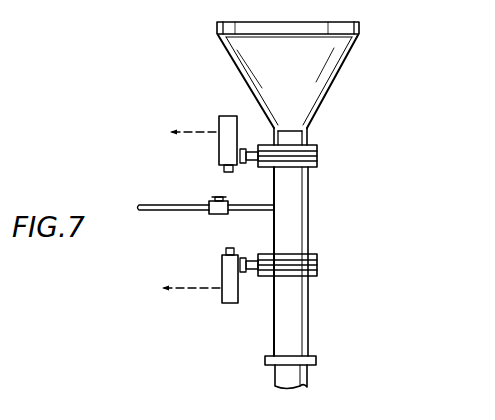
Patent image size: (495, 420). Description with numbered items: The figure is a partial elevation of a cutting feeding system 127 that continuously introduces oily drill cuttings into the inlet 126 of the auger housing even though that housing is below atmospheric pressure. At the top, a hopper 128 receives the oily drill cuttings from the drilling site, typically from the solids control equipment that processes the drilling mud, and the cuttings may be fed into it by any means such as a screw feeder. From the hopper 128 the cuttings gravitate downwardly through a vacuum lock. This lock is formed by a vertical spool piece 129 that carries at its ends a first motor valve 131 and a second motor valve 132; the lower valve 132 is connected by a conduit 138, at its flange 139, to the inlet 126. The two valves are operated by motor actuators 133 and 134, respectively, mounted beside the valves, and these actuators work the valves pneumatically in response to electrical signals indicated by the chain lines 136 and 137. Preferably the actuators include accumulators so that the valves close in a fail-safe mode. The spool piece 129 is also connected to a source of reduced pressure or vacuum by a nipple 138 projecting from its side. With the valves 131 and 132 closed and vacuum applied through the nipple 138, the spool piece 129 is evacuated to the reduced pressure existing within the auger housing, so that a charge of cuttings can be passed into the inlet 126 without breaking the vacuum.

The inlet 126 is at (280, 375).
The cutting feeding system 127 is at (331, 261).
The hopper 128 is at (332, 61).
The spool piece 129 is at (305, 215).
The first motor valve 131 is at (318, 157).
The second motor valve 132 is at (318, 265).
The motor actuator 133 is at (218, 115).
The motor actuator 134 is at (229, 303).
The chain line 136 is at (166, 135).
The chain line 137 is at (177, 290).
The conduit / nipple 138 is at (232, 214).
The flange 139 is at (317, 360).